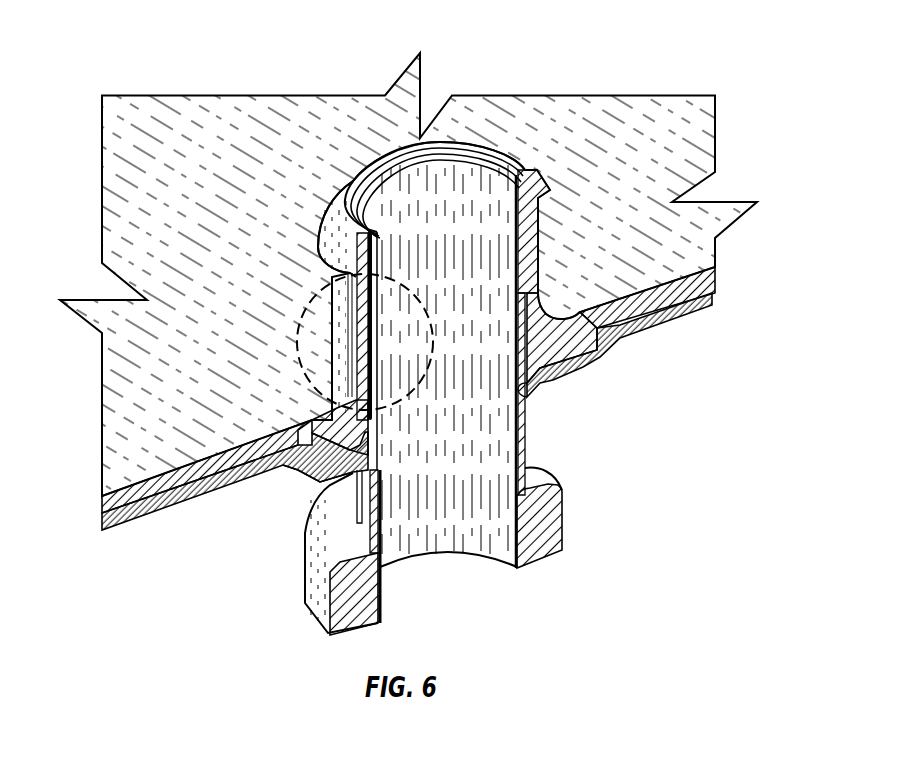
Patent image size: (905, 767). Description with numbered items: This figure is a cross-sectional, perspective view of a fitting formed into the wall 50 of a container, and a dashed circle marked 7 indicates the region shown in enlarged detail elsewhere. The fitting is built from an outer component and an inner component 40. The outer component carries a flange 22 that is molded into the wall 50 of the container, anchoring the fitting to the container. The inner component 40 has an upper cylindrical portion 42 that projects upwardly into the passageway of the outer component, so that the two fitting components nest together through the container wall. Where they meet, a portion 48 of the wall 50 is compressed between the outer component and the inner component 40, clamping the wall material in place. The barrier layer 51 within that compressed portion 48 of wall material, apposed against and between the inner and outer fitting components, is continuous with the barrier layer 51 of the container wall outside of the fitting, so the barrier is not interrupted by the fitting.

The detail view area of FIG. 7 is at (422, 378).
The flange 22 is at (293, 468).
The inner component 40 is at (446, 380).
The upper cylindrical portion 42 is at (492, 195).
The portion of wall 48 is at (572, 385).
The wall 50 is at (663, 308).
The barrier layer 51 is at (717, 283).